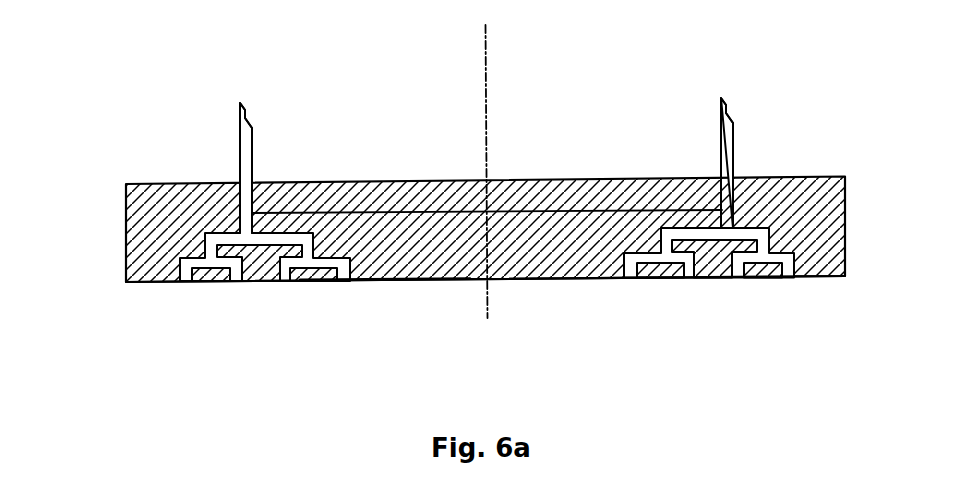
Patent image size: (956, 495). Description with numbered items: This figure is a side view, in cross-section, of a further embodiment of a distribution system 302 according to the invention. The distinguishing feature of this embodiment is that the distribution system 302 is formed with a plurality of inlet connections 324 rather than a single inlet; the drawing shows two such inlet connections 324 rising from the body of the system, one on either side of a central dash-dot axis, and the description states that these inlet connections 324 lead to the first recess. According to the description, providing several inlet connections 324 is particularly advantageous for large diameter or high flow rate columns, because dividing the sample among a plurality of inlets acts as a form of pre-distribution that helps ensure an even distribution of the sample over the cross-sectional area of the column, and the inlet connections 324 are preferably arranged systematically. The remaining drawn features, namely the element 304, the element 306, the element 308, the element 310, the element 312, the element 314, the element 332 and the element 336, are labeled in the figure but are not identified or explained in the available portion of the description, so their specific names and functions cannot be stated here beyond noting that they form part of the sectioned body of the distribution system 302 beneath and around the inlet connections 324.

The distribution system 302 is at (160, 55).
The insulating body 304 is at (144, 188).
The center axis 306 is at (473, 280).
The central conductor block 308 is at (266, 281).
The gap channel 310 is at (213, 283).
The lower region 312 is at (385, 352).
The bottom surface 314 is at (140, 283).
The inlet connections 324 is at (243, 152).
The foot portion 332 is at (345, 283).
The layer boundary 336 is at (266, 211).